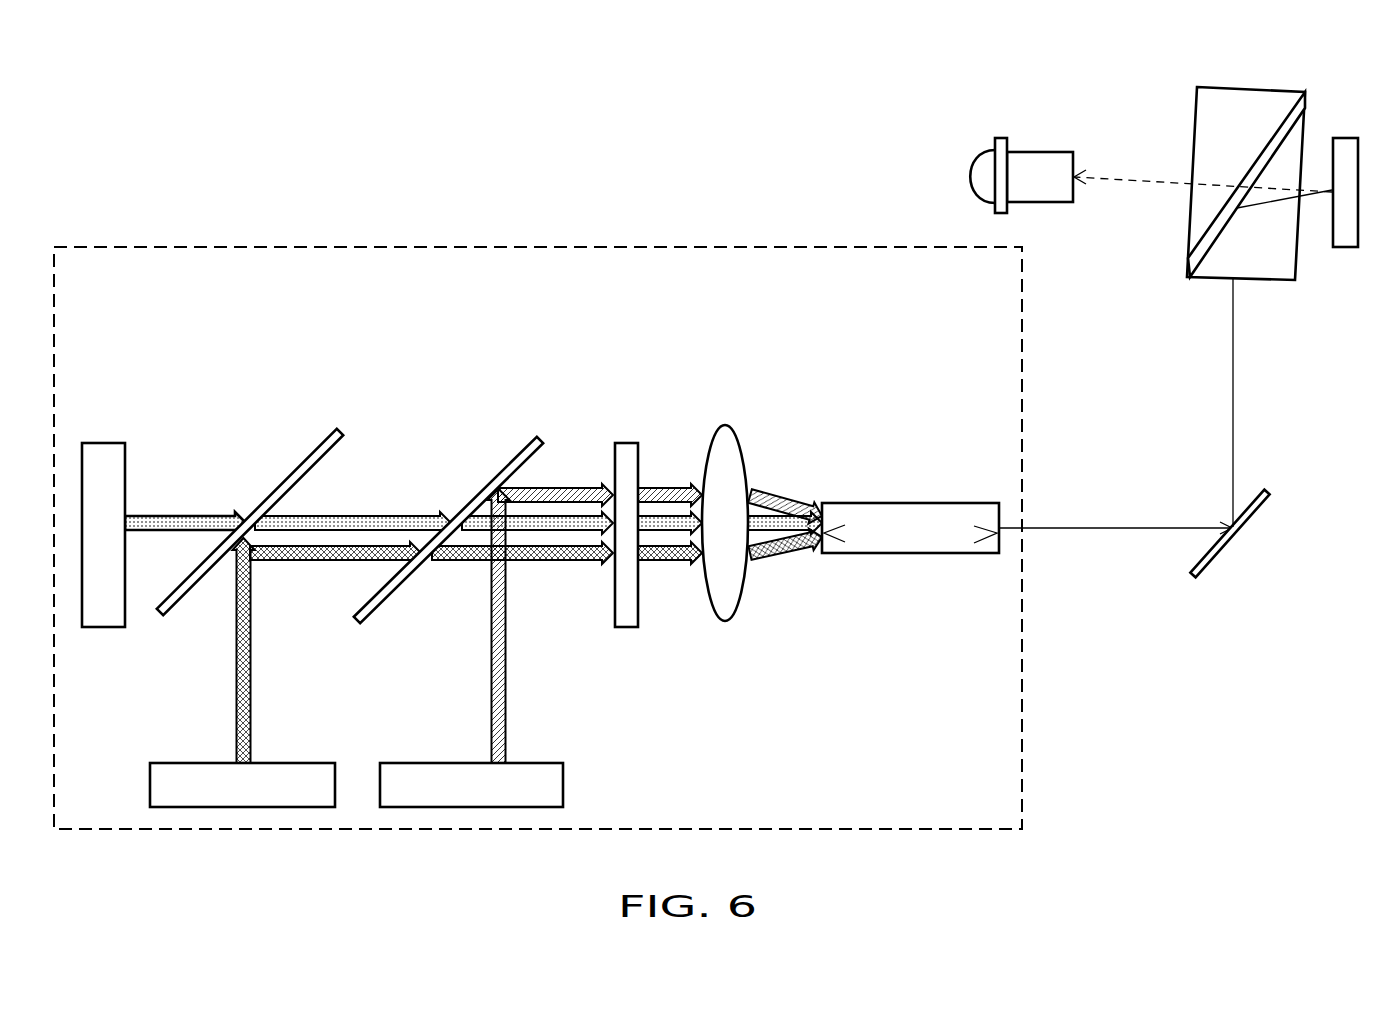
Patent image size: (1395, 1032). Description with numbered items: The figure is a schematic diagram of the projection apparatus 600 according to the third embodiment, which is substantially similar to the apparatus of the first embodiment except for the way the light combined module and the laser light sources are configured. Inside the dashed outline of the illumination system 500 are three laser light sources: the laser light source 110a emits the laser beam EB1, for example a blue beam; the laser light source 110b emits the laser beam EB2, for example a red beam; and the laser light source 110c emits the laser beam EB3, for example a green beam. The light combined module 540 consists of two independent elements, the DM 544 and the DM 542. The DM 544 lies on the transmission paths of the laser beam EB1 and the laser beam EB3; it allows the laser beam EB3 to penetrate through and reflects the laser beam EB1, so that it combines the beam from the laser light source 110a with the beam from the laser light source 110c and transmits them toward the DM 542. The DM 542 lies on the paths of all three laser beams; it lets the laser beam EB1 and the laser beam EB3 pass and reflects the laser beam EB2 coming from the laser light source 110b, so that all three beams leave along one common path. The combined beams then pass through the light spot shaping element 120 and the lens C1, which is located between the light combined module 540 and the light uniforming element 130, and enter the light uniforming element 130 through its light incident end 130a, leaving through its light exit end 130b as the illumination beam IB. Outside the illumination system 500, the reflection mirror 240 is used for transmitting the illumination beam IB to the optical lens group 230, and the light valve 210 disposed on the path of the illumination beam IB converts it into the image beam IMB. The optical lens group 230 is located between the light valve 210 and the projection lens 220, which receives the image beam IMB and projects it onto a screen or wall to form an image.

The illumination system 500 is at (257, 246).
The light combined module 540 is at (350, 462).
The DM 542 is at (527, 443).
The DM 544 is at (342, 435).
The laser light source 110a is at (303, 763).
The laser light source 110b is at (534, 763).
The laser light source 110c is at (97, 628).
The laser beam EB1 is at (236, 735).
The laser beam EB2 is at (506, 657).
The laser beam EB3 is at (179, 515).
The light spot shaping element 120 is at (625, 628).
The lens C1 is at (725, 622).
The light uniforming element 130 is at (911, 568).
The light incident end 130a is at (860, 540).
The light exit end 130b is at (963, 540).
The illumination beam IB is at (1113, 530).
The reflection mirror 240 is at (1238, 540).
The optical lens group 230 is at (1300, 132).
The light valve 210 is at (1346, 148).
The projection lens 220 is at (1034, 152).
The image beam IMB is at (1140, 183).
The projection apparatus 600 is at (1282, 751).